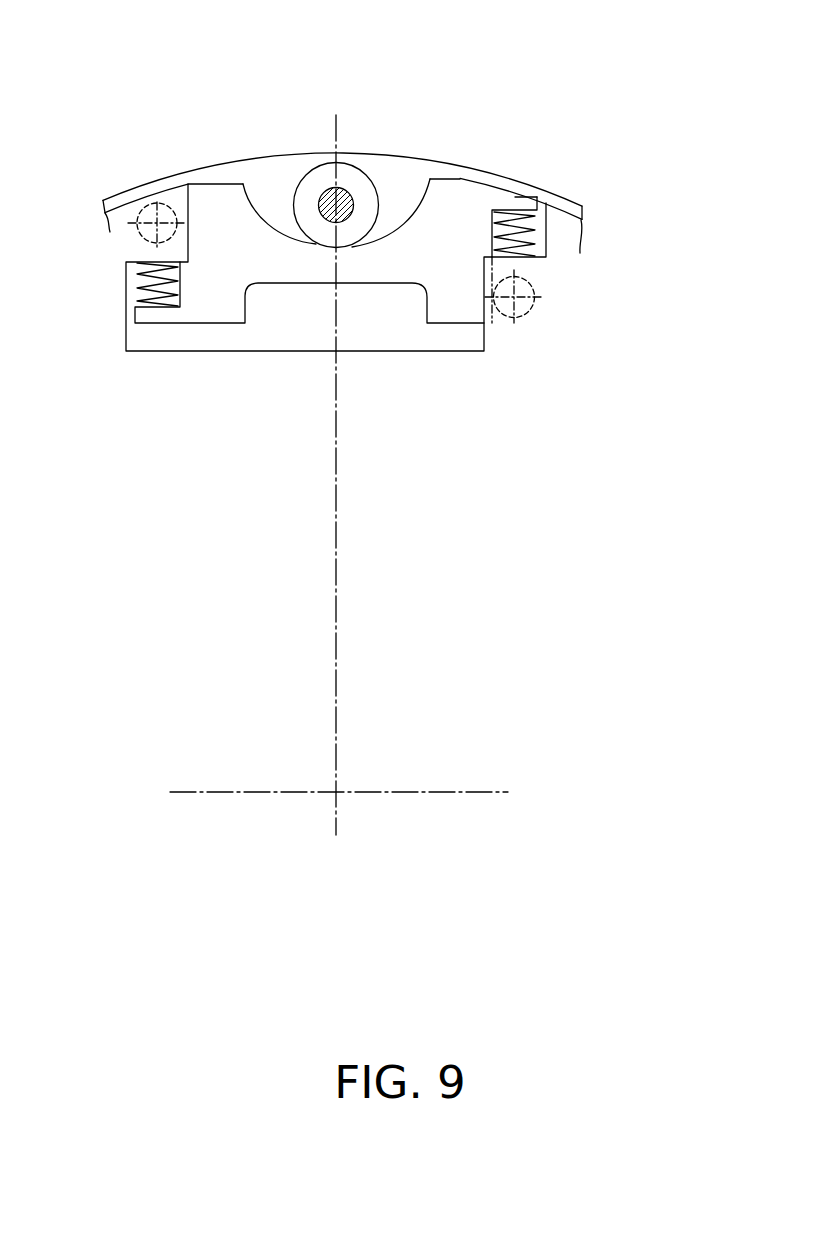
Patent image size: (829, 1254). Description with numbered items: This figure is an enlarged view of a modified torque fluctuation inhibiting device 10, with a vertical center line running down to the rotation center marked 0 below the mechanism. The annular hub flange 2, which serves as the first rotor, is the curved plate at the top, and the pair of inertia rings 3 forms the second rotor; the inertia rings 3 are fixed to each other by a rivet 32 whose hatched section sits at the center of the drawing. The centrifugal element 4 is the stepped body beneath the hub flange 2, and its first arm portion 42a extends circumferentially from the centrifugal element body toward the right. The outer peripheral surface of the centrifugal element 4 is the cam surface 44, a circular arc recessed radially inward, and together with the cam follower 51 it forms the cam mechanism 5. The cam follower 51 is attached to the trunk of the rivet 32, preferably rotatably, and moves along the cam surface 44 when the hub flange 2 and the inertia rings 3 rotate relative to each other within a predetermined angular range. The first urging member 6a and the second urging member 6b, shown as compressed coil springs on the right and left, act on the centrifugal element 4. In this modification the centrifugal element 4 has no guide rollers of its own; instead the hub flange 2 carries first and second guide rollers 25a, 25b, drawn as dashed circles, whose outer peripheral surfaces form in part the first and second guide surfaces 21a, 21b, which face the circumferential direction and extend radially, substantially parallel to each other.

The torque fluctuation inhibiting device 10 is at (538, 88).
The hub flange 2 is at (567, 207).
The inertia ring 3 is at (420, 159).
The centrifugal element 4 is at (462, 178).
The cam surface 44 is at (415, 208).
The cam mechanism 5 is at (288, 221).
The cam follower 51 is at (304, 176).
The rivet 32 is at (349, 191).
The first arm portion 42a is at (515, 196).
The first urging member 6a is at (537, 252).
The second urging member 6b is at (137, 292).
The first guide roller 25a is at (528, 313).
The second guide roller 25b is at (143, 206).
The first guide surface 21a is at (492, 300).
The second guide surface 21b is at (180, 226).
The center axis origin 0 is at (339, 475).